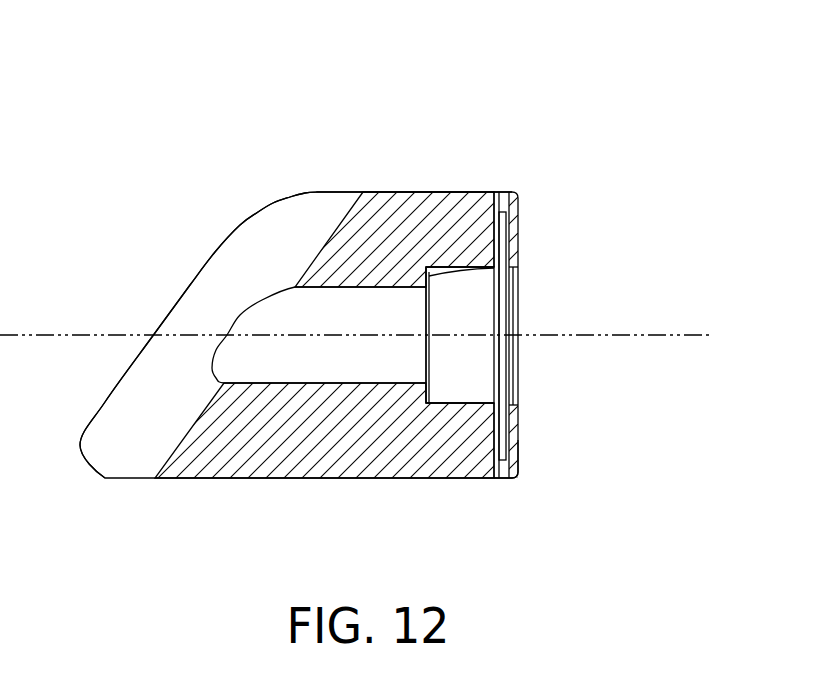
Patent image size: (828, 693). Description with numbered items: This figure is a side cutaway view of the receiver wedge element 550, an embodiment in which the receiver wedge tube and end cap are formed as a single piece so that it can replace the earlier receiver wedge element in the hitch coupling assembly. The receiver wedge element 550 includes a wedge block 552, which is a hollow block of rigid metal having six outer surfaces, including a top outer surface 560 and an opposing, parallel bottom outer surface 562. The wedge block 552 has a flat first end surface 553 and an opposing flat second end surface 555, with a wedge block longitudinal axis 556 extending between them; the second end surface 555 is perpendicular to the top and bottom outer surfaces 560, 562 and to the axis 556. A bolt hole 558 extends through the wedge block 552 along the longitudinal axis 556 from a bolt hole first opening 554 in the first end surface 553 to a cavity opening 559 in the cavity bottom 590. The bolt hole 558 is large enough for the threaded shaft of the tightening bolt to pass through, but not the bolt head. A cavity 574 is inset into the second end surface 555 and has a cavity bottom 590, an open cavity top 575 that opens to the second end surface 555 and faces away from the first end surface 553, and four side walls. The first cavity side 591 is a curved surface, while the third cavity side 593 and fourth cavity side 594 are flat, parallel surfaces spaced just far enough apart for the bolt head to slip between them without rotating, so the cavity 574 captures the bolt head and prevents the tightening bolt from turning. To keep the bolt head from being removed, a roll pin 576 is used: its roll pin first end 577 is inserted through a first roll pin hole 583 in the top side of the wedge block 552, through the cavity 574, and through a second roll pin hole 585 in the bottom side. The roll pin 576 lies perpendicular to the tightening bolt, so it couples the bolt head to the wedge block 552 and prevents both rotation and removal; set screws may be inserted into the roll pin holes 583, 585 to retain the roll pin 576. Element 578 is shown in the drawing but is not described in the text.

The receiver wedge element 550 is at (373, 62).
The wedge block 552 is at (319, 194).
The first end surface 553 is at (118, 411).
The bolt hole first opening 554 is at (232, 323).
The second end surface 555 is at (512, 433).
The wedge block longitudinal axis 556 is at (688, 334).
The bolt hole 558 is at (372, 303).
The cavity opening 559 is at (427, 343).
The top outer surface 560 is at (428, 192).
The bottom outer surface 562 is at (232, 480).
The cavity 574 is at (476, 286).
The open cavity top 575 is at (517, 384).
The roll pin 576 is at (502, 316).
The roll pin first end 577 is at (517, 453).
The upper end wall portion 578 is at (506, 214).
The first roll pin hole 583 is at (501, 211).
The second roll pin hole 585 is at (501, 462).
The cavity bottom 590 is at (496, 270).
The first cavity side 591 is at (468, 358).
The third cavity side 593 is at (446, 266).
The fourth cavity side 594 is at (445, 404).